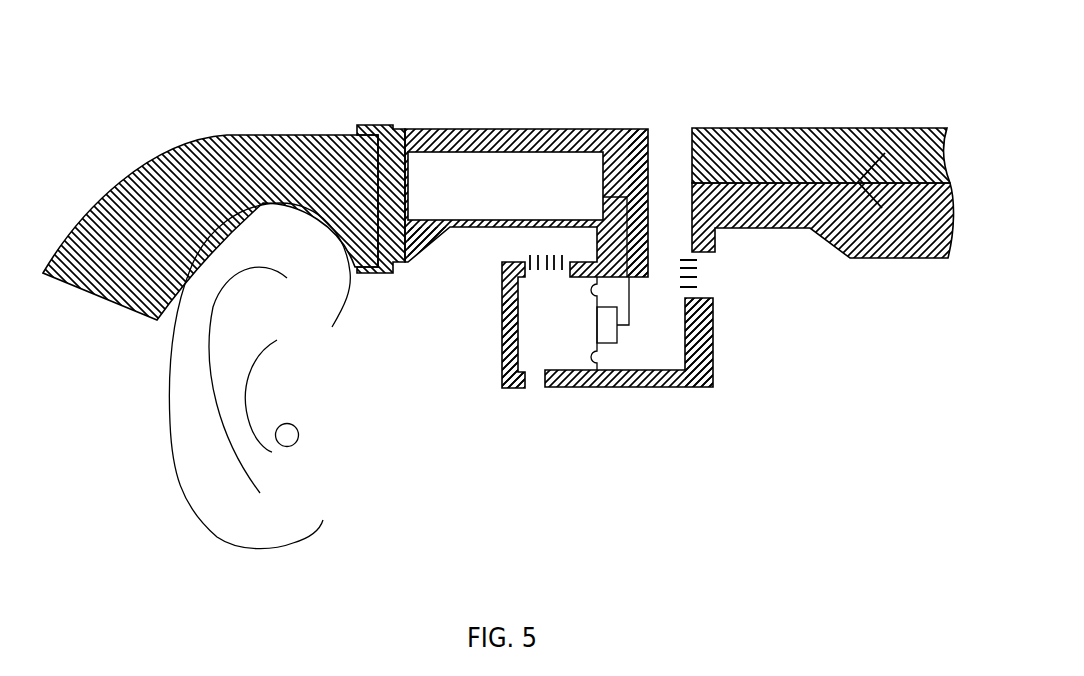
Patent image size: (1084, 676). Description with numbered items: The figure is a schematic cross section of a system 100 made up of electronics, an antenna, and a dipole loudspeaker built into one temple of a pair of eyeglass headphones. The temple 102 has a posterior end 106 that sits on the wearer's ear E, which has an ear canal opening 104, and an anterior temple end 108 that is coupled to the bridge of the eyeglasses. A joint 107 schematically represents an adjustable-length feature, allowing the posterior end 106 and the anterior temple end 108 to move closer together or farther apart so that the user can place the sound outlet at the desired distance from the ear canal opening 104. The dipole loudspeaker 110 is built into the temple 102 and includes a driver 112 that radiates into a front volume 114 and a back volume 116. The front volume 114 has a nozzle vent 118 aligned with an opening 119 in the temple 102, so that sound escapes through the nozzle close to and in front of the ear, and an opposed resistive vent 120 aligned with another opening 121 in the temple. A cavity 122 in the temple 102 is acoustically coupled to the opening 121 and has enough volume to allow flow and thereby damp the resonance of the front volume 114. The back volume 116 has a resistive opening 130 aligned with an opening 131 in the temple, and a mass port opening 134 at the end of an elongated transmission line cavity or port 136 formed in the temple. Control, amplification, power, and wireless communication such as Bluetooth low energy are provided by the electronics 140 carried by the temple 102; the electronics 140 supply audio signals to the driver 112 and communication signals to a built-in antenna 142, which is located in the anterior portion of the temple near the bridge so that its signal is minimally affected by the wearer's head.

The system 100 is at (498, 309).
The temple 102 is at (505, 163).
The ear canal opening 104 is at (299, 440).
The posterior end 106 is at (130, 310).
The joint 107 is at (385, 125).
The anterior temple end 108 is at (823, 193).
The dipole loudspeaker 110 is at (622, 368).
The driver 112 is at (620, 335).
The front volume 114 is at (560, 355).
The back volume 116 is at (672, 359).
The nozzle vent 118 is at (533, 378).
The opening 119 is at (528, 388).
The resistive vent 120 is at (523, 278).
The opening 121 is at (528, 263).
The cavity 122 is at (453, 238).
The resistive opening 130 is at (703, 262).
The opening 131 is at (705, 287).
The mass port opening 134 is at (678, 135).
The transmission line cavity or port 136 is at (648, 129).
The electronics 140 is at (505, 158).
The antenna 142 is at (873, 158).
The ear E is at (222, 537).